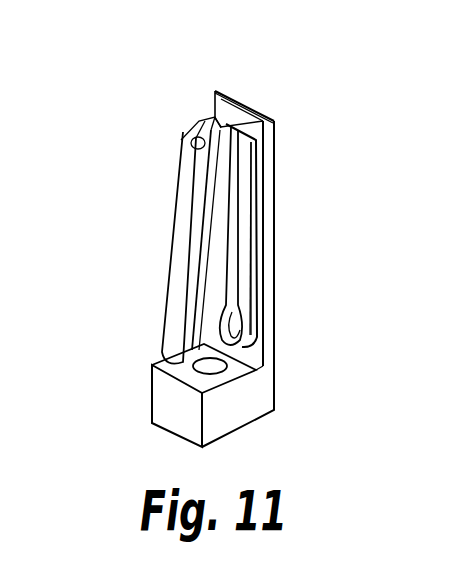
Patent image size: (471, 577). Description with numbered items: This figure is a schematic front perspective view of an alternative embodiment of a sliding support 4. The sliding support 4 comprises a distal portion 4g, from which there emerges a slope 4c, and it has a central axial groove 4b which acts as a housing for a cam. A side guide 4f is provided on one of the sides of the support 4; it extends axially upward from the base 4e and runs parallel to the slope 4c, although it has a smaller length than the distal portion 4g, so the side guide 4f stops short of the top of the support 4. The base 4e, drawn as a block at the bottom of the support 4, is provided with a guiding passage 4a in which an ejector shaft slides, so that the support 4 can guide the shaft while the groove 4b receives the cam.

The sliding support 4 is at (278, 388).
The guiding passage 4a is at (165, 356).
The central axial groove 4b is at (237, 166).
The slope 4c is at (217, 200).
The base 4e is at (183, 413).
The side guide 4f is at (207, 130).
The distal portion 4g is at (249, 107).